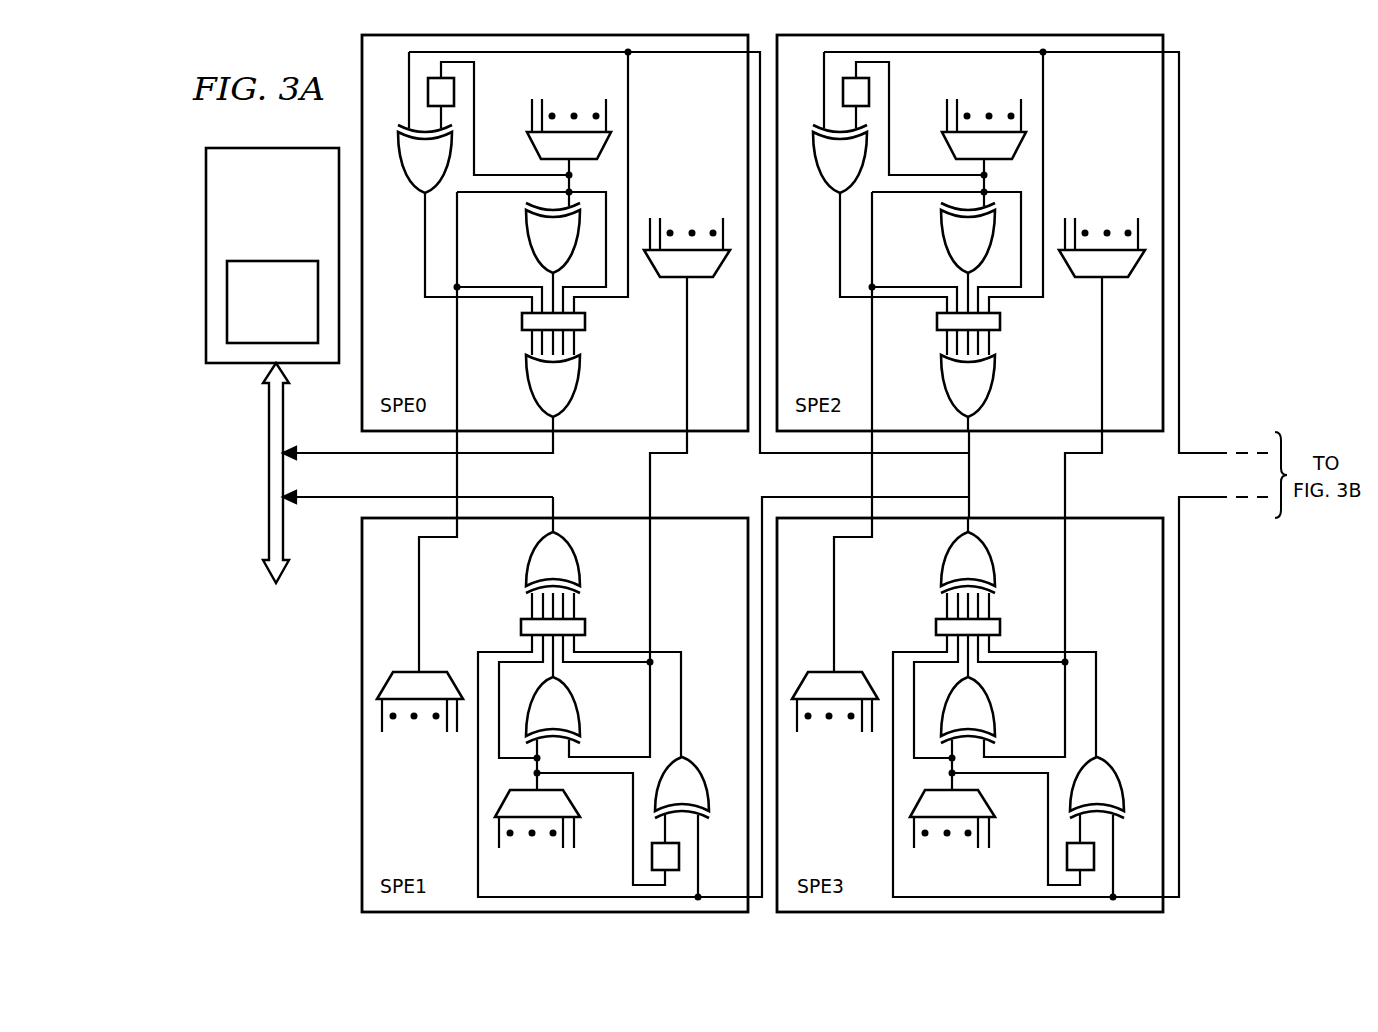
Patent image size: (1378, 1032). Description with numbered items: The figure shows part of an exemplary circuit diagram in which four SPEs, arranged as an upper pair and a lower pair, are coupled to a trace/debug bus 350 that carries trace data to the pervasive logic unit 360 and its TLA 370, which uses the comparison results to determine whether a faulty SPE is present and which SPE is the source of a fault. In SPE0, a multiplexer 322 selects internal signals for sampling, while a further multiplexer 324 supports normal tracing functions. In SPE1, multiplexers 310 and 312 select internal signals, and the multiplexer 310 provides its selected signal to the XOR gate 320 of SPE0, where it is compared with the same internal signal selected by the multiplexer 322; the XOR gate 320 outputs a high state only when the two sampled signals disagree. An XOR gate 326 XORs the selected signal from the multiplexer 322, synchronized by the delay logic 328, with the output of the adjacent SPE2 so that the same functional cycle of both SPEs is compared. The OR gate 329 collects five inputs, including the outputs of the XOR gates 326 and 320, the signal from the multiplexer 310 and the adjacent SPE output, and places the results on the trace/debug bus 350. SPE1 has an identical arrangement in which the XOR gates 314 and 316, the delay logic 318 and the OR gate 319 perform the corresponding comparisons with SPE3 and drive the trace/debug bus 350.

The multiplexer 310 is at (432, 672).
The multiplexer 312 is at (517, 797).
The XOR gate 314 is at (580, 703).
The XOR gate 316 is at (697, 768).
The delay logic 318 is at (652, 858).
The OR gate 319 is at (527, 580).
The XOR gate 320 is at (532, 252).
The multiplexer 322 is at (608, 150).
The multiplexer 324 is at (670, 278).
The XOR gate 326 is at (410, 182).
The delay logic 328 is at (455, 92).
The OR gate 329 is at (580, 373).
The trace/debug bus 350 is at (269, 527).
The pervasive logic unit 360 is at (253, 243).
The trace logic analyzer 370 is at (253, 328).